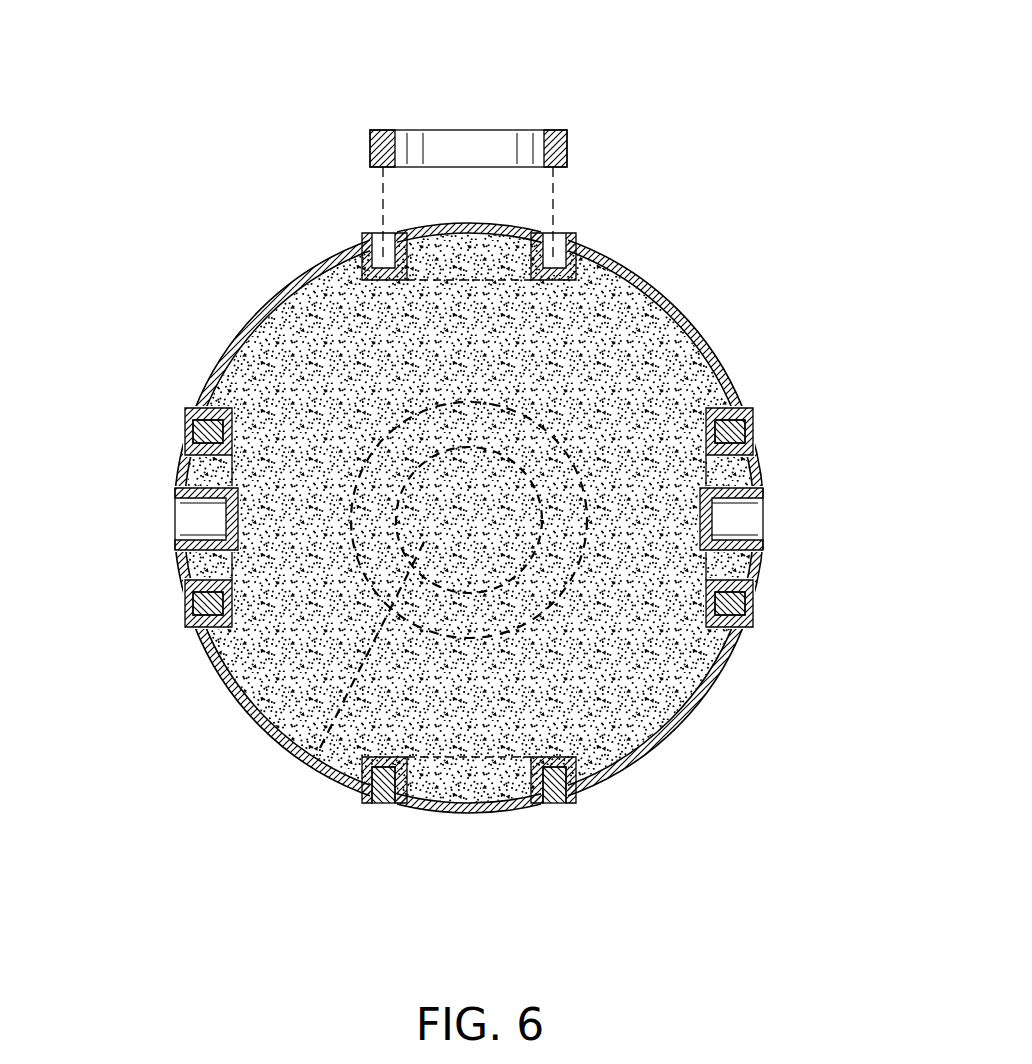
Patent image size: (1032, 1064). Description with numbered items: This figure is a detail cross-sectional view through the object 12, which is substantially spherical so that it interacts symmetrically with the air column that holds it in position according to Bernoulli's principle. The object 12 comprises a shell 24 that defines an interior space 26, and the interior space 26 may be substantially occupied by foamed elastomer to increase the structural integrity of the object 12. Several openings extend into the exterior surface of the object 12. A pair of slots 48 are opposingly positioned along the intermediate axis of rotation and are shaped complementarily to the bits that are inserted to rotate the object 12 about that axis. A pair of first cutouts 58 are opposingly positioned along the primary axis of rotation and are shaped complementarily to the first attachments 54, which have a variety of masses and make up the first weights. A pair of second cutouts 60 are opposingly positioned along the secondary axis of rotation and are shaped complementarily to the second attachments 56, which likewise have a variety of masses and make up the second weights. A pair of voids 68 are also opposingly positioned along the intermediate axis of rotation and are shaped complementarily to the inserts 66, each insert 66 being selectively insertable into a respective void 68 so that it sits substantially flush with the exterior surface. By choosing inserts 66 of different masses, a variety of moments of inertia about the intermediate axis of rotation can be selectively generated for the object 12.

The object 12 is at (688, 318).
The shell 24 is at (253, 315).
The interior space 26 is at (323, 320).
The slots 48 is at (188, 517).
The first attachments 54 is at (250, 708).
The second attachments 56 is at (568, 137).
The first cutouts 58 is at (315, 763).
The second cutouts 60 is at (558, 247).
The inserts 66 is at (193, 437).
The voids 68 is at (202, 427).